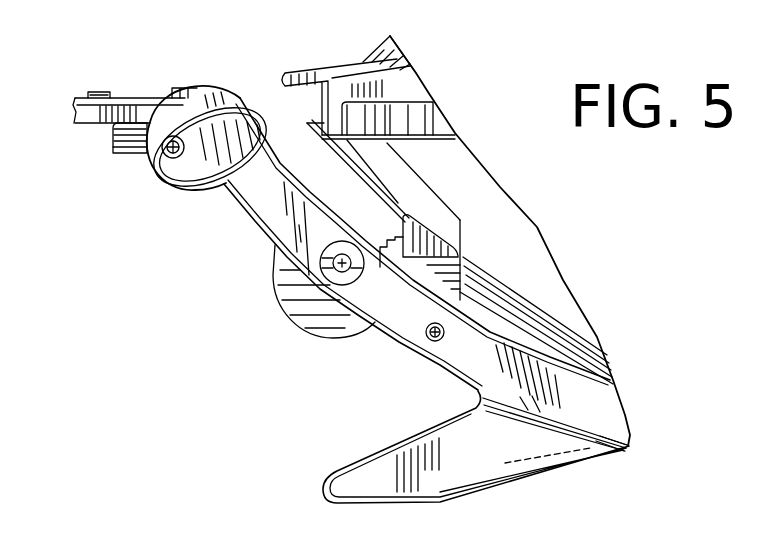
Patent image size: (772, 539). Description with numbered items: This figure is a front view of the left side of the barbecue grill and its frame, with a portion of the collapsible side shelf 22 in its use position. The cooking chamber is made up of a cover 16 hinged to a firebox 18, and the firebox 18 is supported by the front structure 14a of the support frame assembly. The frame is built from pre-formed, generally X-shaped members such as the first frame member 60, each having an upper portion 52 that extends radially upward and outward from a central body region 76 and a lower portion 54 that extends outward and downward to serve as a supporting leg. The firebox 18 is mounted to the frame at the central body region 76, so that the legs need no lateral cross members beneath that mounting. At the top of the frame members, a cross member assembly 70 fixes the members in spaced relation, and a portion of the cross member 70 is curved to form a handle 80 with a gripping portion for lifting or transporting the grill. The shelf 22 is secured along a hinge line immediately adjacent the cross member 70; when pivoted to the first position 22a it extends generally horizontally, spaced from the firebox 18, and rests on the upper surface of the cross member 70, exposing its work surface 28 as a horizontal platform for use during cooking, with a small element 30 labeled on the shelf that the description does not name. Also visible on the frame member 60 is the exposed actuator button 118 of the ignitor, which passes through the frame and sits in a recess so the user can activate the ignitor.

The front structure 14a is at (601, 412).
The cover 16 is at (395, 50).
The firebox 18 is at (580, 240).
The side shelf 22 is at (163, 60).
The first position 22a is at (66, 117).
The work surface 28 is at (138, 100).
The rail lug 30 is at (99, 93).
The upper portion 52 is at (268, 410).
The lower portion 54 is at (296, 482).
The first frame member 60 is at (484, 461).
The cross member assembly 70 is at (122, 153).
The central body region 76 is at (467, 367).
The handle 80 is at (115, 130).
The exposed actuator button 118 is at (360, 274).